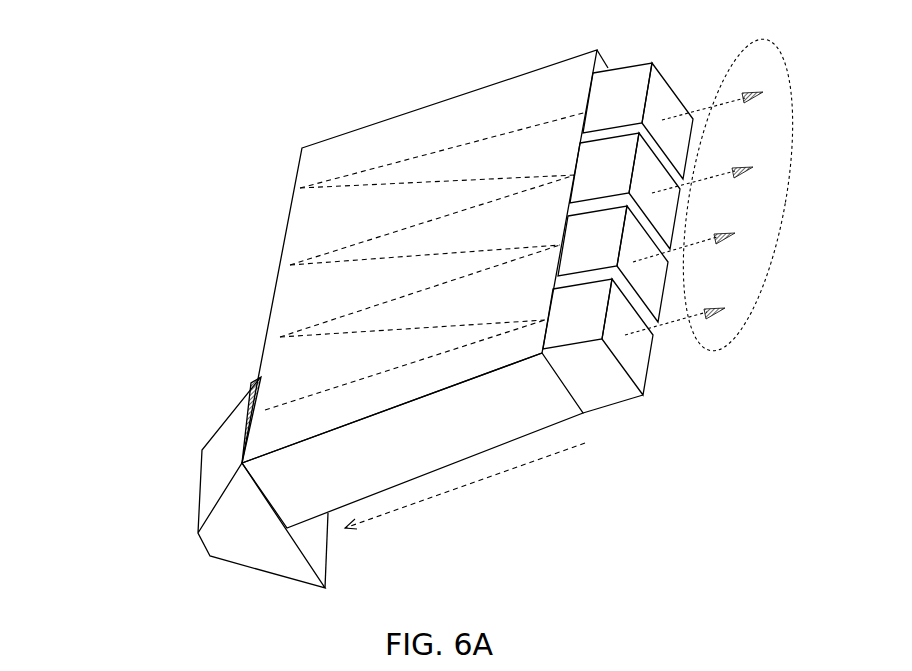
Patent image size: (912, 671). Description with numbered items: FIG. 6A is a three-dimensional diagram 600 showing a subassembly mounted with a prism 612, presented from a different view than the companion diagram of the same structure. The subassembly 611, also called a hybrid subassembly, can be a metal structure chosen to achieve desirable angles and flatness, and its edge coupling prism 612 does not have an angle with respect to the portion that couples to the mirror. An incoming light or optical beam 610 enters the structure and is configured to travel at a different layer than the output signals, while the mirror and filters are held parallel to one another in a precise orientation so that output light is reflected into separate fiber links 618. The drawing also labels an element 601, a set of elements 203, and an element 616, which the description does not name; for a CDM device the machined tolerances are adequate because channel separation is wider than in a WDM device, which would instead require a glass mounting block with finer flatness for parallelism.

The three-dimensional diagram 600 is at (183, 62).
The light guide body 601 is at (300, 154).
The light output blocks 203 is at (618, 238).
The incoming light or optical beam 610 is at (473, 482).
The subassembly 611 is at (412, 440).
The prism 612 is at (263, 483).
The internal light paths 616 is at (306, 307).
The fiber links 618 is at (752, 315).